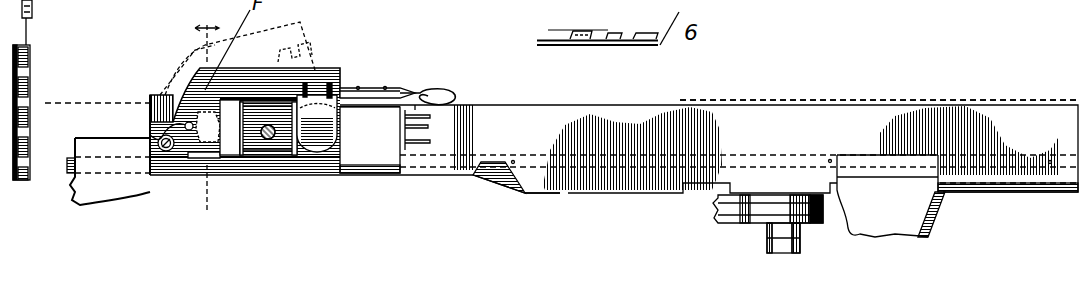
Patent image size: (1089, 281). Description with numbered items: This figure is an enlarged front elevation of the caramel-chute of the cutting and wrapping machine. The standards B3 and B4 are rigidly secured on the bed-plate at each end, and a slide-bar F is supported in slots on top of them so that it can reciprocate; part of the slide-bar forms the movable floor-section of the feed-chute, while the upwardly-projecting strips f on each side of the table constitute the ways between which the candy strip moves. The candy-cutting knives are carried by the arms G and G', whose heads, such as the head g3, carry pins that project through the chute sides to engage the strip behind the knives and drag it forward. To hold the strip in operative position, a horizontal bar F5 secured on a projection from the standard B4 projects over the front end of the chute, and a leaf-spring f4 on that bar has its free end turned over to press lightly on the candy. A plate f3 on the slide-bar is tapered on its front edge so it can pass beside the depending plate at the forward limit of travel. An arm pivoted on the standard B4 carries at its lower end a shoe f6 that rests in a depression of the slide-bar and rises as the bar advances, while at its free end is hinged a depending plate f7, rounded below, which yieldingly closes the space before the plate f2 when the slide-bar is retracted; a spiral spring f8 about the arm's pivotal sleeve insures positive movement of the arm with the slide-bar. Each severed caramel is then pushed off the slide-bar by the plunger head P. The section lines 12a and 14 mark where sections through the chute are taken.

The longitudinal strips f is at (993, 105).
The slide-bar F is at (995, 195).
The standard B4 is at (150, 95).
The spiral spring f8 is at (165, 150).
The shoe f6 is at (200, 158).
The section line 14 is at (206, 116).
The plunger head P is at (255, 155).
The depending plate f7 is at (322, 142).
The plate f2 is at (373, 150).
The plate f3 is at (492, 236).
The horizontal bar F5 is at (370, 90).
The leaf-spring f4 is at (440, 93).
The head g3 is at (420, 128).
The arm G' is at (766, 229).
The arm G is at (769, 251).
The standard B3 is at (892, 228).
The section line 12a is at (559, 95).